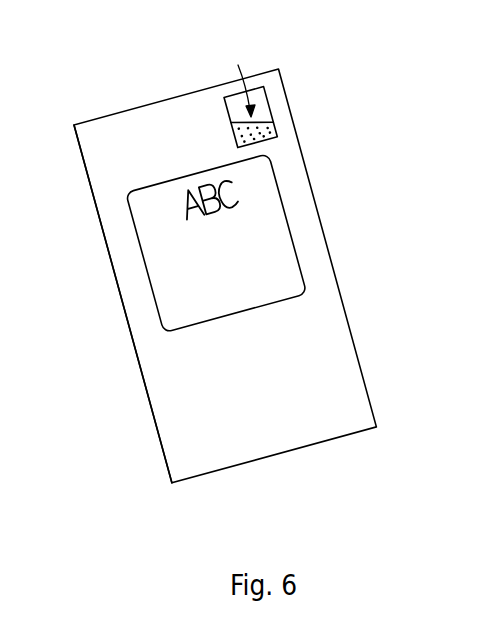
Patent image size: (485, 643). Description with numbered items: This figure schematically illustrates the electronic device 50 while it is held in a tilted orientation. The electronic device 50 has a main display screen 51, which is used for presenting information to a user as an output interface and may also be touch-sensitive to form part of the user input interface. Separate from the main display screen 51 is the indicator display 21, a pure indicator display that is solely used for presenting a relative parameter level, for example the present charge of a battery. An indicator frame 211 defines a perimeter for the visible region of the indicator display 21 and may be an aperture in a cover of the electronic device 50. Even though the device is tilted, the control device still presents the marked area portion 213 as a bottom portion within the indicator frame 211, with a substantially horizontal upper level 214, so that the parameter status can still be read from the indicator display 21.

The electronic device 50 is at (242, 276).
The main display screen 51 is at (157, 415).
The indicator display 21 is at (160, 316).
The indicator frame 211 is at (236, 109).
The marked area portion 213 is at (263, 130).
The upper level 214 is at (227, 77).